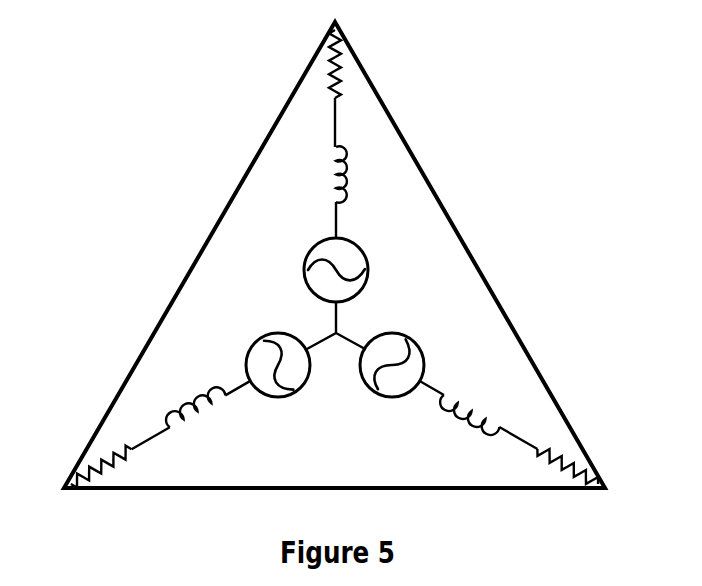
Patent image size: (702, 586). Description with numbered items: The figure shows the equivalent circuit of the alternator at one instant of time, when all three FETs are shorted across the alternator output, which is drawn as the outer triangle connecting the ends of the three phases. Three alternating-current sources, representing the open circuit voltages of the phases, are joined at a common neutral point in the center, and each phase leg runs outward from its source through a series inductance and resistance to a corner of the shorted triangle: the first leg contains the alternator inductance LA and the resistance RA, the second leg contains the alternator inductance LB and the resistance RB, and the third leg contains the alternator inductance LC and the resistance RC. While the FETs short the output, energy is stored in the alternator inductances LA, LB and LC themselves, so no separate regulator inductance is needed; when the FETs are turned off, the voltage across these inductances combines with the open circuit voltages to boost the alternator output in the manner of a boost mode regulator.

The phase A resistance RA is at (348, 76).
The alternator inductance LA is at (358, 174).
The phase B resistance RB is at (558, 468).
The alternator inductance LB is at (474, 407).
The phase C resistance RC is at (116, 468).
The alternator inductance LC is at (186, 406).